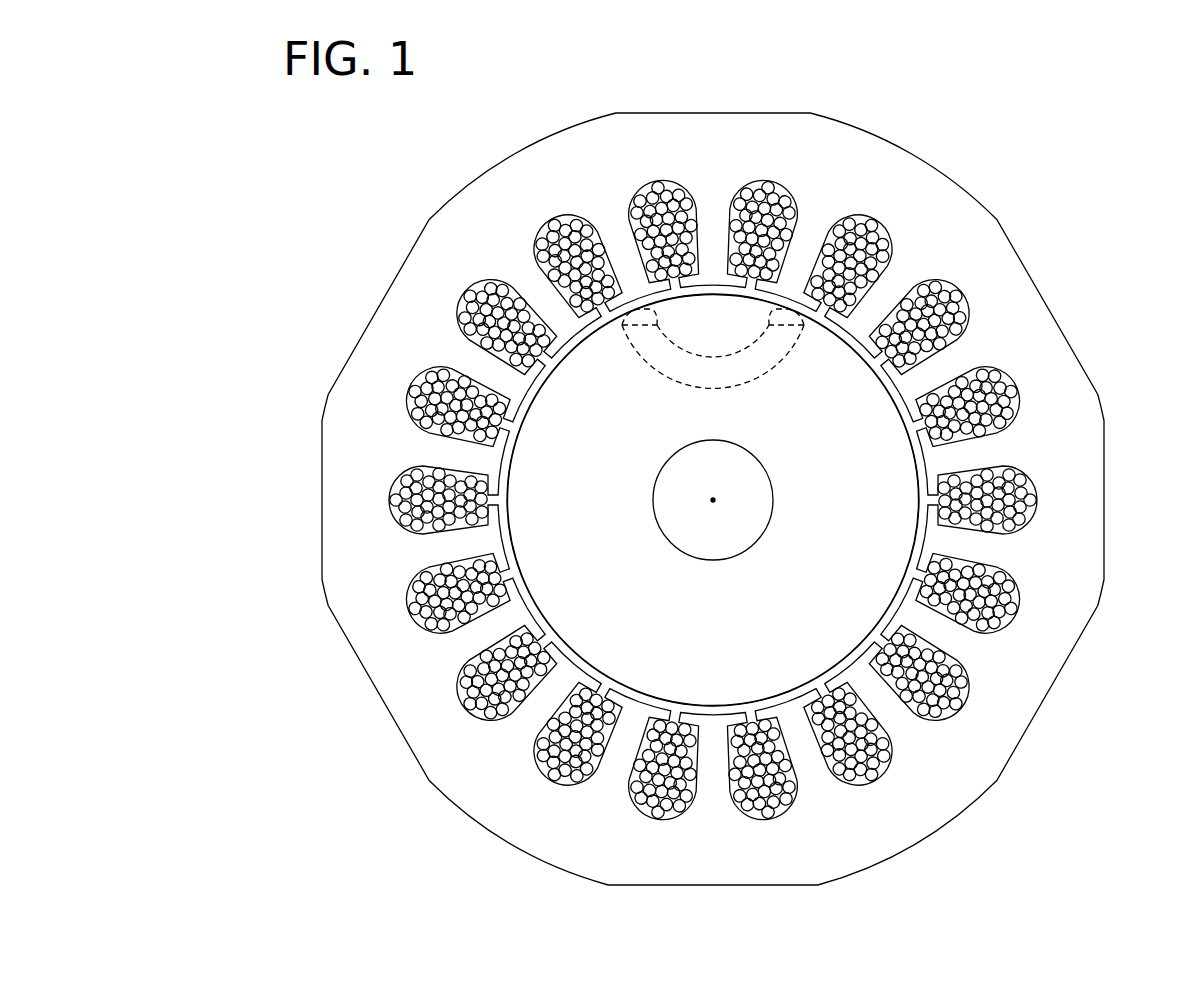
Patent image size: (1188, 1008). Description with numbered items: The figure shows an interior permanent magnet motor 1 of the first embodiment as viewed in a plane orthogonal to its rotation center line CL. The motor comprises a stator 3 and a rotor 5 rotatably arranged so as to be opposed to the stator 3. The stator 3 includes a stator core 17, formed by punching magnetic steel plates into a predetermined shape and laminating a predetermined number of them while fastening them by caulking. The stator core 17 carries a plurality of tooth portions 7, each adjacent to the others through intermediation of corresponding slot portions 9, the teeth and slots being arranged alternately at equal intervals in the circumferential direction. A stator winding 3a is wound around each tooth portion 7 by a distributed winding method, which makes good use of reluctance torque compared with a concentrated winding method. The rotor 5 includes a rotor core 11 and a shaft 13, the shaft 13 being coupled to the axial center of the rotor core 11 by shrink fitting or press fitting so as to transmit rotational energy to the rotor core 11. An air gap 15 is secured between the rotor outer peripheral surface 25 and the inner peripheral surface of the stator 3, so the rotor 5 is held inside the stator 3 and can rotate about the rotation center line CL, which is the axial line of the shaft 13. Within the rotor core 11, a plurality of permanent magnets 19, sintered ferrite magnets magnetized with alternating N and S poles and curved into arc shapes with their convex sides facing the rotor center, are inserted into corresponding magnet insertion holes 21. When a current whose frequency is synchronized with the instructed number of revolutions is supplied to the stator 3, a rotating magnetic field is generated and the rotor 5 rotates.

The interior permanent magnet motor 1 is at (262, 190).
The stator 3 is at (641, 136).
The stator winding 3a is at (680, 190).
The rotor 5 is at (902, 393).
The tooth portions 7 is at (567, 327).
The slot portions 9 is at (590, 210).
The rotor core 11 is at (870, 528).
The shaft 13 is at (697, 560).
The air gap 15 is at (497, 457).
The stator core 17 is at (955, 213).
The permanent magnets 19 is at (795, 305).
The magnet insertion holes 21 is at (640, 305).
The rotor outer peripheral surface 25 is at (902, 293).
The rotation center line CL is at (713, 500).